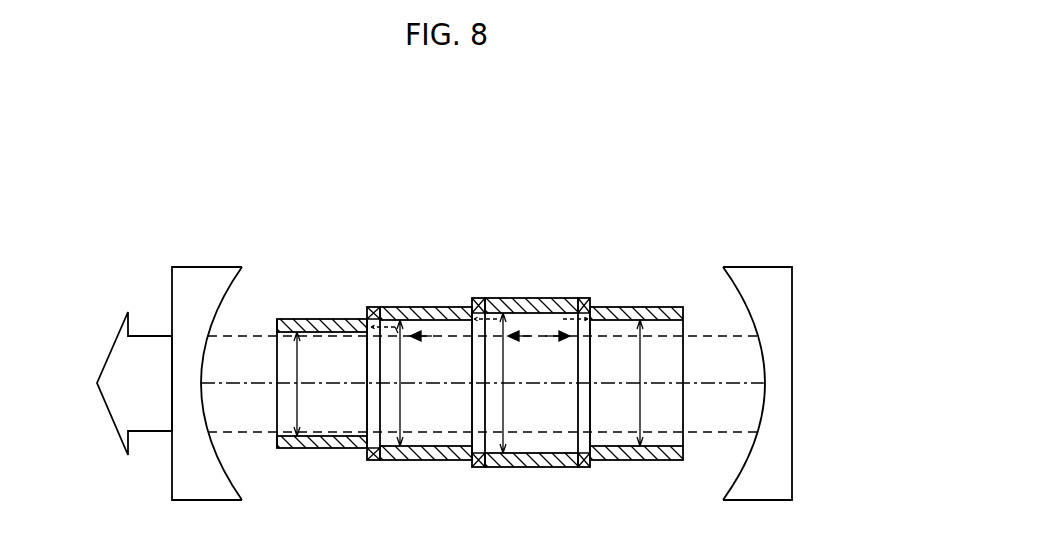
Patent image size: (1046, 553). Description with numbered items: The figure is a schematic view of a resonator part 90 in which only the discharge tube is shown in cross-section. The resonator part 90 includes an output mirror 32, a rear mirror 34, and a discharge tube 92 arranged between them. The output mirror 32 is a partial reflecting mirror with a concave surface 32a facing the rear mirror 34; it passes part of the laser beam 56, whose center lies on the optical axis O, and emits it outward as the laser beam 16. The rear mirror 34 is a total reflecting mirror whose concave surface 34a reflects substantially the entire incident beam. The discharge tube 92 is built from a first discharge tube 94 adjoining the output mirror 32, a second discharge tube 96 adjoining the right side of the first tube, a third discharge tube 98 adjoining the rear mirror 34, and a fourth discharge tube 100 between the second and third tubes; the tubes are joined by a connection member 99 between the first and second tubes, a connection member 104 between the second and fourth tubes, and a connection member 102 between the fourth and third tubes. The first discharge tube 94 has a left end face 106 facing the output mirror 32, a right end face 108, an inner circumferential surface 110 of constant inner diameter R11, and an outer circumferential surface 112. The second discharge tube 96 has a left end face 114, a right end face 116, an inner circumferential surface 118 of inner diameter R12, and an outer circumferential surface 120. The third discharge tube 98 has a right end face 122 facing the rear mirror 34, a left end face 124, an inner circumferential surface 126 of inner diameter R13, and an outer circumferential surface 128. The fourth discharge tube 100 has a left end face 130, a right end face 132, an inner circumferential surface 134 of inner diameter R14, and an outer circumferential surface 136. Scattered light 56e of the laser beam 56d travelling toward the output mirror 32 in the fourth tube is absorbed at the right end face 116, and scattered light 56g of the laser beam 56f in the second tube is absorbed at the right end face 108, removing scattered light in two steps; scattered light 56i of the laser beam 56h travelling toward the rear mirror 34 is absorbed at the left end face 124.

The laser beam 16 is at (148, 333).
The output mirror 32 is at (224, 353).
The concave surface 32a is at (233, 280).
The rear mirror 34 is at (745, 353).
The concave surface 34a is at (727, 283).
The laser beam 56 is at (250, 333).
The laser beam 56d is at (500, 335).
The scattered light 56e is at (480, 319).
The laser beam 56f is at (395, 330).
The scattered light 56g is at (384, 327).
The laser beam 56h is at (548, 340).
The scattered light 56i is at (572, 319).
The resonator part 90 is at (718, 94).
The discharge tube 92 is at (487, 178).
The first discharge tube 94 is at (325, 286).
The second discharge tube 96 is at (438, 241).
The third discharge tube 98 is at (657, 260).
The connection member 99 is at (377, 308).
The fourth discharge tube 100 is at (547, 238).
The connection member 102 is at (604, 369).
The connection member 104 is at (480, 298).
The left end face 106 is at (311, 378).
The right end face 108 is at (371, 378).
The inner circumferential surface 110 is at (335, 425).
The outer circumferential surface 112 is at (280, 318).
The left end face 114 is at (377, 372).
The right end face 116 is at (480, 410).
The inner circumferential surface 118 is at (445, 438).
The outer circumferential surface 120 is at (415, 307).
The right end face 122 is at (683, 440).
The left end face 124 is at (585, 347).
The inner circumferential surface 126 is at (651, 437).
The outer circumferential surface 128 is at (627, 307).
The left end face 130 is at (472, 368).
The right end face 132 is at (580, 403).
The inner circumferential surface 134 is at (548, 443).
The outer circumferential surface 136 is at (520, 298).
The inner diameter R11 is at (312, 384).
The inner diameter R12 is at (416, 383).
The inner diameter R13 is at (656, 383).
The inner diameter R14 is at (520, 383).
The optical axis O is at (727, 383).